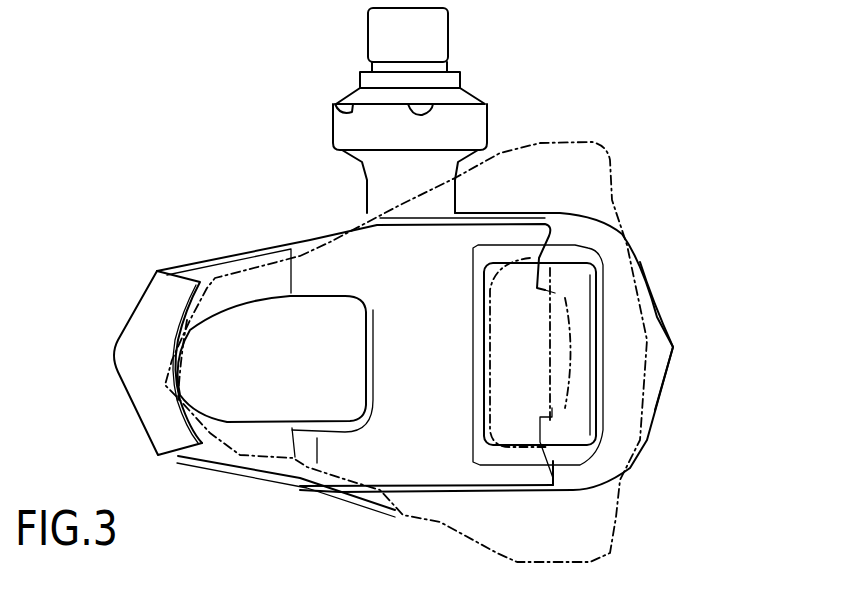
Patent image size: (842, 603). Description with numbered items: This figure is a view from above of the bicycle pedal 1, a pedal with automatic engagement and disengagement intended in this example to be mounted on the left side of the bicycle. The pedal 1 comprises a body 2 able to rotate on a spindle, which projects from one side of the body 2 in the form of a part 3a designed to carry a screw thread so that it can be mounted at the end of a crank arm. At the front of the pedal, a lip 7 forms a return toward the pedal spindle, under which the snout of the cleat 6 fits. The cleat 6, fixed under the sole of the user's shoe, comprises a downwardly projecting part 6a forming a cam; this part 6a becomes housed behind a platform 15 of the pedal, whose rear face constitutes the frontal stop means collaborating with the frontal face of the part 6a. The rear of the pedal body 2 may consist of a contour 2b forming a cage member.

The bicycle pedal 1 is at (265, 200).
The body 2 is at (310, 487).
The contour 2b is at (658, 328).
The part of the spindle 3a is at (432, 34).
The cleat 6 is at (567, 180).
The downwardly projecting part 6a is at (527, 368).
The lip 7 is at (143, 390).
The platform 15 is at (420, 423).